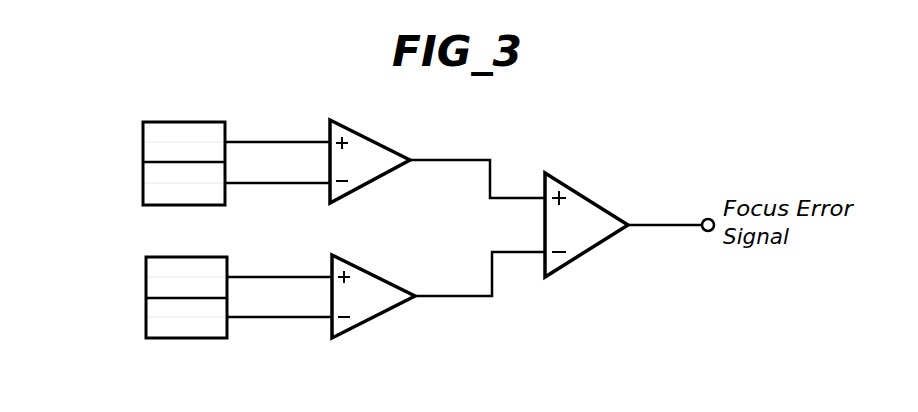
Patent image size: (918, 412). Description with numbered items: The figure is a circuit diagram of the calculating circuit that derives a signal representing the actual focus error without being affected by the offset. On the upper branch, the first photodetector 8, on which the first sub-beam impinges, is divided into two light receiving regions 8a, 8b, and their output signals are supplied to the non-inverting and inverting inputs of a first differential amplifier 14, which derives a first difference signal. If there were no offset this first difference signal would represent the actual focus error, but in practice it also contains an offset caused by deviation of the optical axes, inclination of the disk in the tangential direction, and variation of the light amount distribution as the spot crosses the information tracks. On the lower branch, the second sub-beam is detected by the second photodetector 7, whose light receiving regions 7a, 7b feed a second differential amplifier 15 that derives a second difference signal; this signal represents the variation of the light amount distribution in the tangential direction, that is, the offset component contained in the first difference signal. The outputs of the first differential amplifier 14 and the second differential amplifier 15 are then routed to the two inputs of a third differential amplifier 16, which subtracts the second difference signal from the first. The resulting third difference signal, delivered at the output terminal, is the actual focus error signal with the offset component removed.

The second photodetector 7 is at (187, 342).
The light receiving region 7a is at (146, 277).
The light receiving region 7b is at (146, 318).
The first photodetector 8 is at (180, 118).
The light receiving region 8a is at (143, 142).
The light receiving region 8b is at (143, 184).
The first differential amplifier 14 is at (384, 141).
The second differential amplifier 15 is at (378, 315).
The third differential amplifier 16 is at (598, 204).